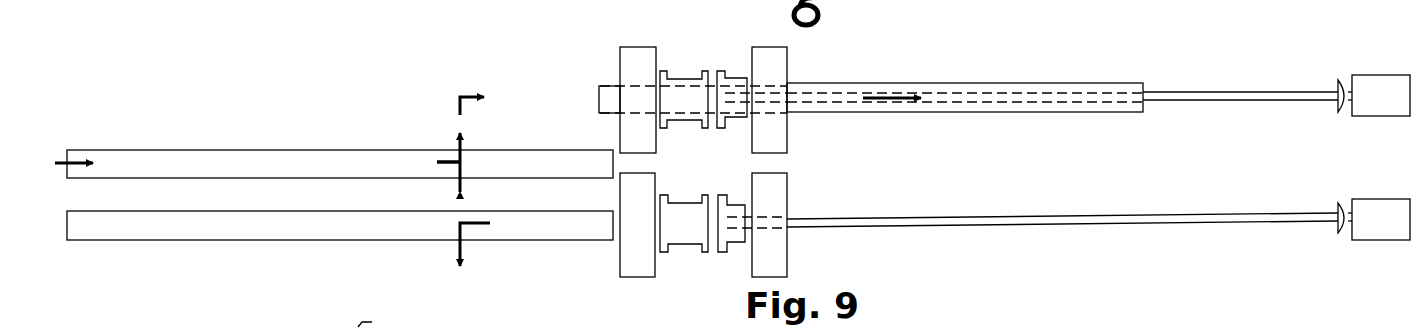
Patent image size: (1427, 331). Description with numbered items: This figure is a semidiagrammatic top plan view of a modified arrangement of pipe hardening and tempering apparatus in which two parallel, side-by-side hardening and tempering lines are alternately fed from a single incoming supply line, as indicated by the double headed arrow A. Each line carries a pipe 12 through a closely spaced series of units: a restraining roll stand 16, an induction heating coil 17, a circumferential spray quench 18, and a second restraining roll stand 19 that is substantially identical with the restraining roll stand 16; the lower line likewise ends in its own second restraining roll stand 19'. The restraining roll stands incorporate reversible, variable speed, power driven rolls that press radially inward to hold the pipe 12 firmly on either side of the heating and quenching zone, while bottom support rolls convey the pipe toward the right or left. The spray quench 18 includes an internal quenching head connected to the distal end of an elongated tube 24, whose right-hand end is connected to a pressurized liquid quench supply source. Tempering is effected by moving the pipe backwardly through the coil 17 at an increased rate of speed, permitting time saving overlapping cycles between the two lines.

The pipe 12 is at (970, 84).
The restraining roll stand 16 is at (636, 38).
The induction heating coil 17 is at (686, 78).
The circumferential spray quench 18 is at (735, 78).
The second restraining roll stand 19 is at (801, 91).
The second restraining roll stand 19' is at (724, 252).
The elongated tube 24 is at (1270, 94).
The double headed arrow A is at (462, 156).